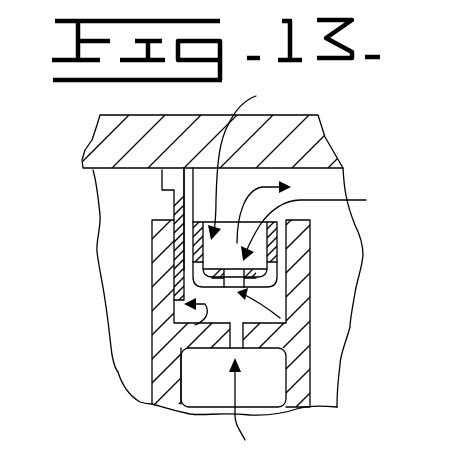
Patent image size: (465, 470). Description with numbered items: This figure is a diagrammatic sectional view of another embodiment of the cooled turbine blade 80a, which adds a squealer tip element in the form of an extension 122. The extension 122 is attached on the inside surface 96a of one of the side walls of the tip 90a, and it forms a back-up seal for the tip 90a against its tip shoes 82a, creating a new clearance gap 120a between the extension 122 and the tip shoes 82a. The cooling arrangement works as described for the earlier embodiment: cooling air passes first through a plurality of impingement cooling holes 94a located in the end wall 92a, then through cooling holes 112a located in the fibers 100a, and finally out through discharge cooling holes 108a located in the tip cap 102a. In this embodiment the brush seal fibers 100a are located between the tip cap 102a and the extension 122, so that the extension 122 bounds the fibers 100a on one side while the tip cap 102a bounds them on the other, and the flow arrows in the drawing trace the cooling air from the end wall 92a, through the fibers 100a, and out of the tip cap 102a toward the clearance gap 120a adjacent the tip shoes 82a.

The cooled turbine blade 80a is at (118, 371).
The tip shoes 82a is at (93, 188).
The tip 90a is at (192, 250).
The end wall 92a is at (183, 408).
The impingement cooling holes 94a is at (242, 351).
The inside surface 96a is at (228, 324).
The brush seal fibers 100a is at (259, 161).
The tip cap 102a is at (215, 168).
The discharge cooling holes 108a is at (301, 253).
The cooling holes 112a is at (288, 323).
The clearance gap 120a is at (160, 180).
The extension 122 is at (174, 196).